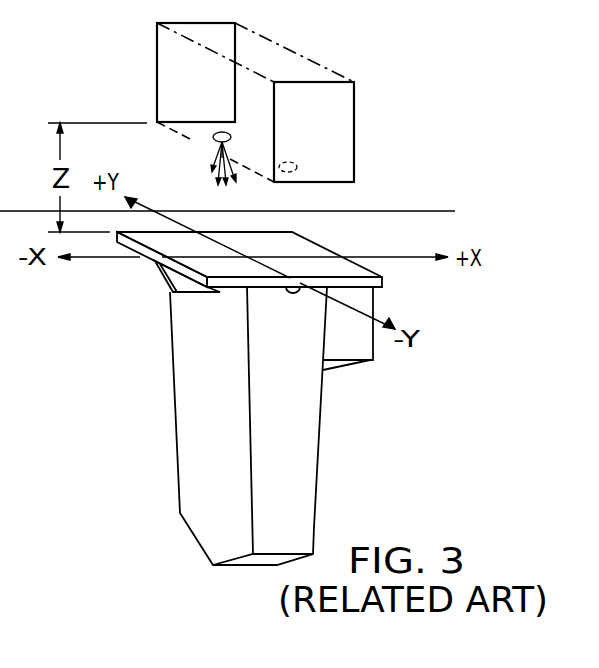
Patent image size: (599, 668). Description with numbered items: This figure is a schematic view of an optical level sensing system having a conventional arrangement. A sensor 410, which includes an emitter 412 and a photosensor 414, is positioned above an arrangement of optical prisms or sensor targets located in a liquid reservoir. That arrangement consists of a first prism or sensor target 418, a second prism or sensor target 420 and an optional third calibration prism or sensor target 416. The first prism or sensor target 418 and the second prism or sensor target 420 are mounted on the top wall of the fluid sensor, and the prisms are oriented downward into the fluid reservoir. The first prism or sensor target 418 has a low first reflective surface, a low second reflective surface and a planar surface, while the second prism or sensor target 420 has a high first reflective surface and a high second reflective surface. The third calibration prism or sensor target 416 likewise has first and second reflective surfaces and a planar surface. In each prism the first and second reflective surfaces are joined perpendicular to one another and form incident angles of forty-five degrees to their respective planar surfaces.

The sensor 410 is at (170, 77).
The emitter 412 is at (208, 138).
The photosensor 414 is at (297, 168).
The third calibration prism or sensor target 416 is at (178, 280).
The first prism or sensor target 418 is at (195, 539).
The second prism or sensor target 420 is at (351, 365).